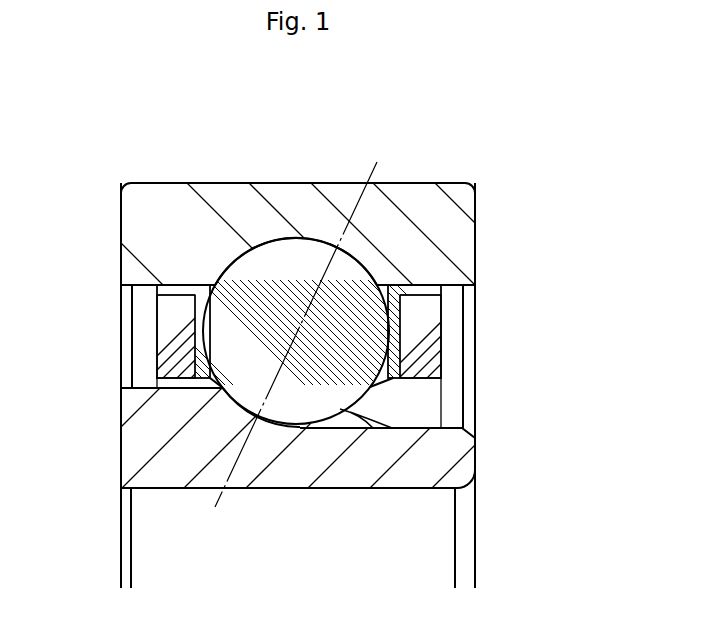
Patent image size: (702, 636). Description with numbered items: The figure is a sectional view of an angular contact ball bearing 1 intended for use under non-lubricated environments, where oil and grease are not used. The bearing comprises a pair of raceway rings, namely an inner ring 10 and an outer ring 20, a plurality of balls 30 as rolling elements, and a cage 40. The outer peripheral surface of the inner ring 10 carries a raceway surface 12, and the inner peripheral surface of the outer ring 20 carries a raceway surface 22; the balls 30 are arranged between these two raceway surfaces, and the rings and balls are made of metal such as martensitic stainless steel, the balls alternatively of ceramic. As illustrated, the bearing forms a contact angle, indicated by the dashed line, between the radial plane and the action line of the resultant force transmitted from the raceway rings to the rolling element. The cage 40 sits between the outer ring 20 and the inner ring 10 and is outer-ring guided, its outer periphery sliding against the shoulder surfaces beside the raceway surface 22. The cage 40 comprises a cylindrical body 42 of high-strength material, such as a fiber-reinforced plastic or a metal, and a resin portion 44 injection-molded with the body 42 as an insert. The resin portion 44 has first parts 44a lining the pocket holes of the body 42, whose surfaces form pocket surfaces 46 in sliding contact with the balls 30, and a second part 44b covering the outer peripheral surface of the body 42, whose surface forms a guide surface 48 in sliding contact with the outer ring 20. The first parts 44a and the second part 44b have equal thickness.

The angular contact ball bearing 1 is at (510, 180).
The inner ring 10 is at (438, 462).
The raceway surface 12 is at (274, 426).
The outer ring 20 is at (302, 202).
The raceway surface 22 is at (293, 240).
The ball 30 is at (332, 385).
The cage 40 is at (150, 347).
The body 42 is at (173, 323).
The resin portion 44 is at (178, 287).
The first part 44a is at (391, 319).
The second part 44b is at (415, 285).
The pocket surface 46 is at (207, 334).
The guide surface 48 is at (187, 287).